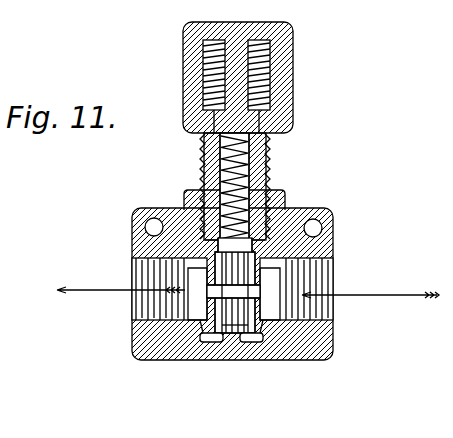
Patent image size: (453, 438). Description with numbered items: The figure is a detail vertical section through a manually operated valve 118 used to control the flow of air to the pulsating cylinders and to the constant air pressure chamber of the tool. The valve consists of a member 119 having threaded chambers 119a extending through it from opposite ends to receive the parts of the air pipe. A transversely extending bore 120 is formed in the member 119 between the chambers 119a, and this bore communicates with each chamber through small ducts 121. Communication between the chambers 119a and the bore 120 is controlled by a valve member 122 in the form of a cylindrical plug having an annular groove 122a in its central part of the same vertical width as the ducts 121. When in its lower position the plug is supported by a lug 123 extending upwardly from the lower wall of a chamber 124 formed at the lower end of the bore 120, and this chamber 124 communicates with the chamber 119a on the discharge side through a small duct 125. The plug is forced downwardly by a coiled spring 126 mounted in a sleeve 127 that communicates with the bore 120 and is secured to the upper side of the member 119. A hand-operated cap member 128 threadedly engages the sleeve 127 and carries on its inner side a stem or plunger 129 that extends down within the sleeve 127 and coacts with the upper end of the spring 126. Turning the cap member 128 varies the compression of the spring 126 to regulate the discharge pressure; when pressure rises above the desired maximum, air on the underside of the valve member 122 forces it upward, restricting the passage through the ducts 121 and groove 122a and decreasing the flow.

The manually operated valve 118 is at (334, 222).
The member 119 is at (292, 347).
The threaded chambers 119a is at (140, 303).
The transversely extending bore 120 is at (277, 222).
The small ducts 121 is at (140, 278).
The valve member 122 is at (250, 334).
The annular groove 122a is at (258, 320).
The lug 123 is at (228, 338).
The chamber 124 is at (207, 339).
The small duct 125 is at (200, 325).
The coiled spring 126 is at (260, 174).
The sleeve 127 is at (205, 182).
The hand-operated cap member 128 is at (283, 78).
The stem or plunger 129 is at (238, 70).